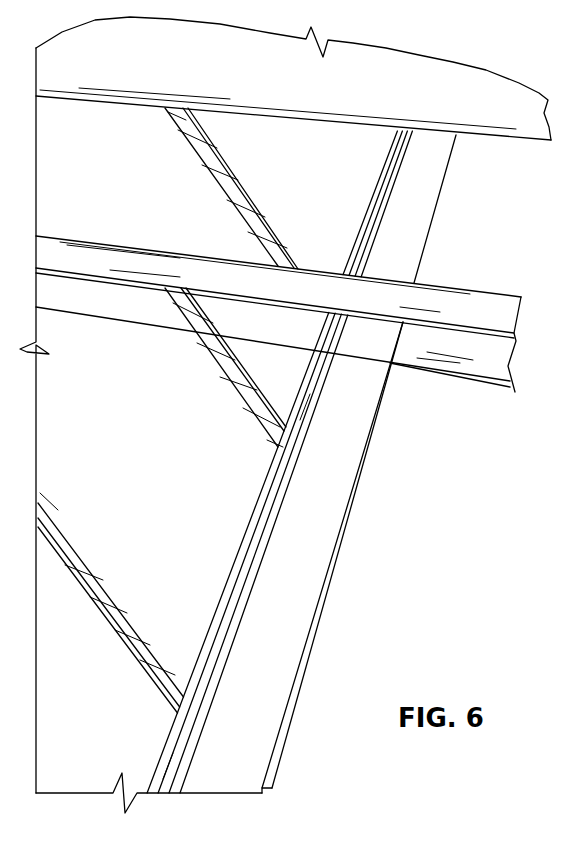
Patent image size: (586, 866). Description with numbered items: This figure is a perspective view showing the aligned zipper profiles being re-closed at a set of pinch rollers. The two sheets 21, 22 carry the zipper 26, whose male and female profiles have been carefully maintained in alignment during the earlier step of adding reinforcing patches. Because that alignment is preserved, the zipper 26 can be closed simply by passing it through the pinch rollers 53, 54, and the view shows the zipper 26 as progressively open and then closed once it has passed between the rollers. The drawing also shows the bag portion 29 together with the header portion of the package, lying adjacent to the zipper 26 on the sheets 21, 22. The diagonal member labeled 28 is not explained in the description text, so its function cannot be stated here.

The sheet 21 is at (217, 776).
The sheet 22 is at (278, 766).
The zipper 26 is at (370, 222).
The post 28 is at (330, 505).
The bag portion 29 is at (153, 207).
The pinch roller 53 is at (503, 318).
The pinch roller 54 is at (503, 363).